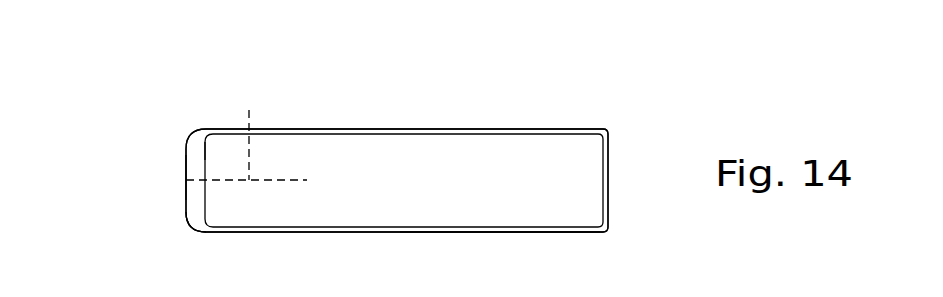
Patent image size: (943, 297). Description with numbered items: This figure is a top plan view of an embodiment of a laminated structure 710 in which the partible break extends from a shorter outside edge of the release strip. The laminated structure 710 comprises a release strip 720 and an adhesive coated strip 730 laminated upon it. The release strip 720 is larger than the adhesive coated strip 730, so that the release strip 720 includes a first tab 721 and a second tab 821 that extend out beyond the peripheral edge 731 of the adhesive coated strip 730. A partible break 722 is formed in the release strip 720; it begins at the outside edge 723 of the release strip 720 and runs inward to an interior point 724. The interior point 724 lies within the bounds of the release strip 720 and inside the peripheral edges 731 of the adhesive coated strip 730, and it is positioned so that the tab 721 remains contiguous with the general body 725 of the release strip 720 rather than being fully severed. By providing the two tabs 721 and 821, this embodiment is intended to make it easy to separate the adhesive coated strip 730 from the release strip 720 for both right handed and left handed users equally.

The laminated structure 710 is at (512, 80).
The release strip 720 is at (382, 129).
The adhesive coated strip 730 is at (527, 129).
The partible break 722 is at (249, 132).
The interior point 724 is at (307, 180).
The peripheral edge 731 is at (205, 151).
The tab 721 is at (186, 167).
The outside edge 723 is at (186, 187).
The tab 821 is at (187, 222).
The general body 725 is at (497, 233).